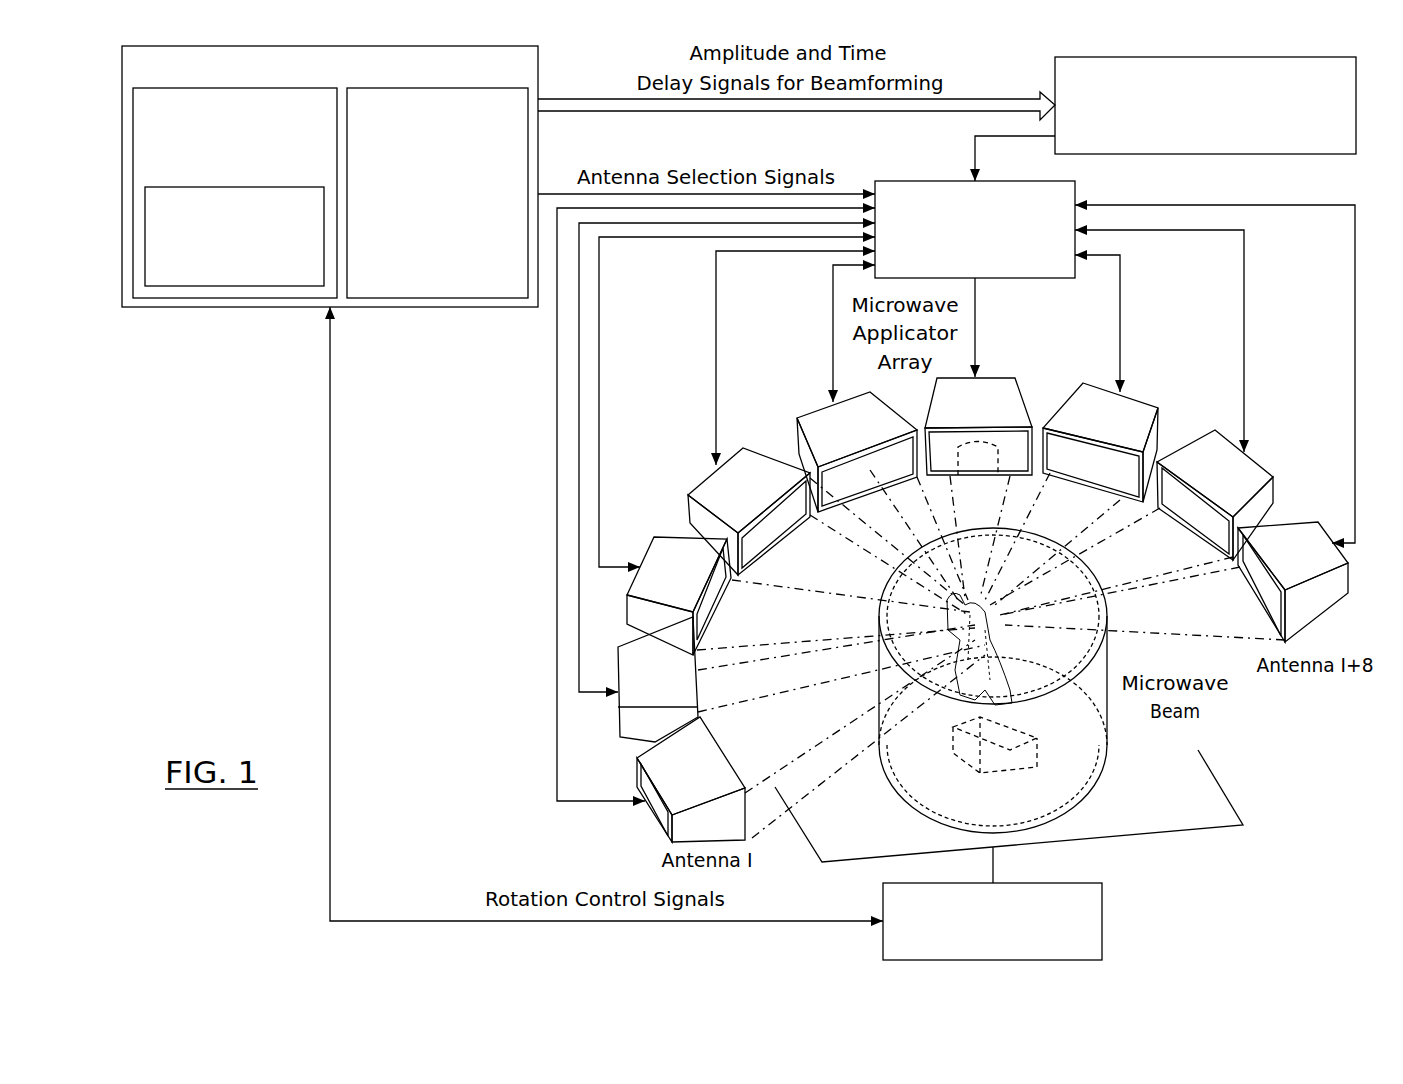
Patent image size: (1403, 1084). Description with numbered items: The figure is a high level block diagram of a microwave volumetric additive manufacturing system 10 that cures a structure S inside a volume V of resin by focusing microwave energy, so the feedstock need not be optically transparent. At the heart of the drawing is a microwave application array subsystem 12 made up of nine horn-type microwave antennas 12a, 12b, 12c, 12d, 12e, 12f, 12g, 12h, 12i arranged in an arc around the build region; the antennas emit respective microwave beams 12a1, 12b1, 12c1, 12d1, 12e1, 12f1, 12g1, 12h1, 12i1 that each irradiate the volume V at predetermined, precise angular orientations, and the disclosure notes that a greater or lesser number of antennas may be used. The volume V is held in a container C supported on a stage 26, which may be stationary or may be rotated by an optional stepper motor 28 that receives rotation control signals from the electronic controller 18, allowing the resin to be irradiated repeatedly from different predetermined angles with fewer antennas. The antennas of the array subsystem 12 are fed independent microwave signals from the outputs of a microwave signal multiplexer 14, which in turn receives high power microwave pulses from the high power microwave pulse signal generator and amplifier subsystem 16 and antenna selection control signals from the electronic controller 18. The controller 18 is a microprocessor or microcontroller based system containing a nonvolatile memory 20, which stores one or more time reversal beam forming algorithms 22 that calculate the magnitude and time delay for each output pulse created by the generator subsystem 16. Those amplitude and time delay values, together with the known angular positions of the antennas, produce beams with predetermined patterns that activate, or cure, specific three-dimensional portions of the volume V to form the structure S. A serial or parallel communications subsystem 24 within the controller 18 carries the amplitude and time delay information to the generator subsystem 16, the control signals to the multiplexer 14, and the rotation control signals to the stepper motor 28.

The microwave volumetric additive manufacturing system 10 is at (274, 525).
The microwave application array subsystem 12 is at (998, 345).
The microwave antenna 12a is at (654, 818).
The microwave antenna 12b is at (632, 740).
The microwave antenna 12c is at (677, 537).
The microwave antenna 12d is at (710, 477).
The microwave antenna 12e is at (813, 408).
The microwave antenna 12f is at (1022, 392).
The microwave antenna 12g is at (1133, 395).
The microwave antenna 12h is at (1253, 458).
The microwave antenna 12i is at (1327, 617).
The microwave beam 12a1 is at (842, 752).
The microwave beam 12b1 is at (817, 698).
The microwave beam 12c1 is at (827, 643).
The microwave beam 12d1 is at (860, 593).
The microwave beam 12e1 is at (912, 545).
The microwave beam 12f1 is at (995, 517).
The microwave beam 12g1 is at (1075, 535).
The microwave beam 12h1 is at (1135, 578).
The microwave beam 12i1 is at (1168, 635).
The microwave signal multiplexer 14 is at (938, 181).
The high power microwave pulse signal generator and amplifier subsystem 16 is at (1272, 154).
The electronic controller 18 is at (538, 72).
The nonvolatile memory 20 is at (190, 88).
The time reversal beam forming algorithm 22 is at (217, 287).
The communications subsystem 24 is at (457, 300).
The stage 26 is at (1028, 696).
The stepper motor 28 is at (1102, 922).
The container C is at (923, 810).
The volume of feedstock material V is at (923, 767).
The structure S is at (1020, 753).